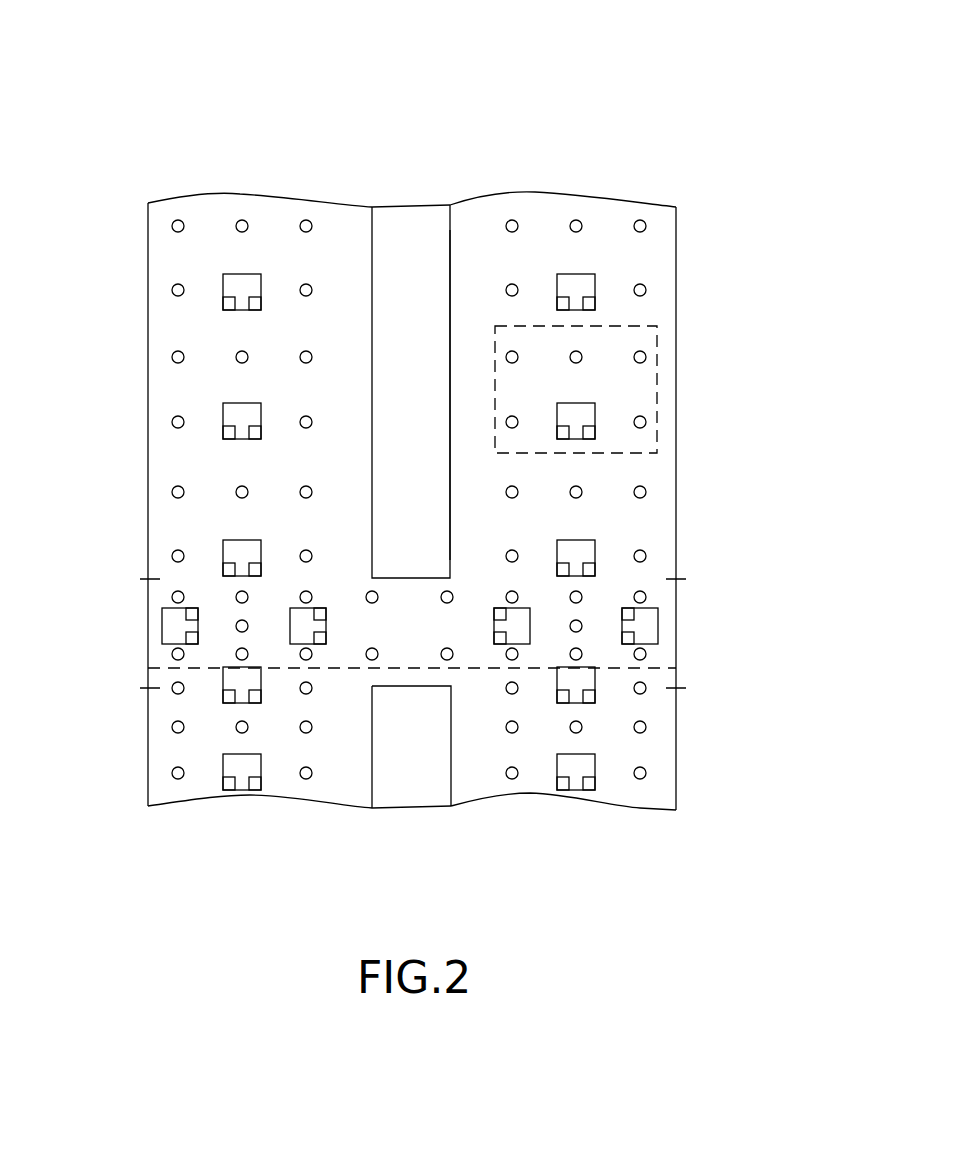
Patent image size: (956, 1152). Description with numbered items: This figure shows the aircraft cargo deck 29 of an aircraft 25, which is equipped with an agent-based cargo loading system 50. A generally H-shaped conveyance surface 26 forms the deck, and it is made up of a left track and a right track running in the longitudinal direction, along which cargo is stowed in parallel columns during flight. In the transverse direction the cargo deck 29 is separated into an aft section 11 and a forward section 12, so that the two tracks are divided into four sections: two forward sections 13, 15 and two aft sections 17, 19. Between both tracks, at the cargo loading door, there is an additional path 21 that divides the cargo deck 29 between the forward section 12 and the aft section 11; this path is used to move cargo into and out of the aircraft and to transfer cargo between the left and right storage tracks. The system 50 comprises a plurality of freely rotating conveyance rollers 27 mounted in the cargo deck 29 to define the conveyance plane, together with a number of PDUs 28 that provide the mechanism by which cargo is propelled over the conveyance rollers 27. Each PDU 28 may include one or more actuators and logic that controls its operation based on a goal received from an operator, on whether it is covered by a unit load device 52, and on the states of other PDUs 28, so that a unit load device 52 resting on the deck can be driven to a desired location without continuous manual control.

The agent-based cargo loading system 50 is at (313, 75).
The aircraft 25 is at (763, 193).
The forward section 12 is at (121, 361).
The aft section 11 is at (141, 765).
The forward section of track 13 is at (317, 213).
The forward section of track 15 is at (657, 232).
The aft section of track 17 is at (333, 775).
The aft section of track 19 is at (643, 795).
The H-shaped conveyance surface 26 is at (412, 228).
The aircraft cargo deck 29 is at (435, 230).
The conveyance rollers 27 is at (314, 422).
The PDU 28 is at (268, 543).
The additional path 21 is at (97, 645).
The unit load device 52 is at (657, 410).